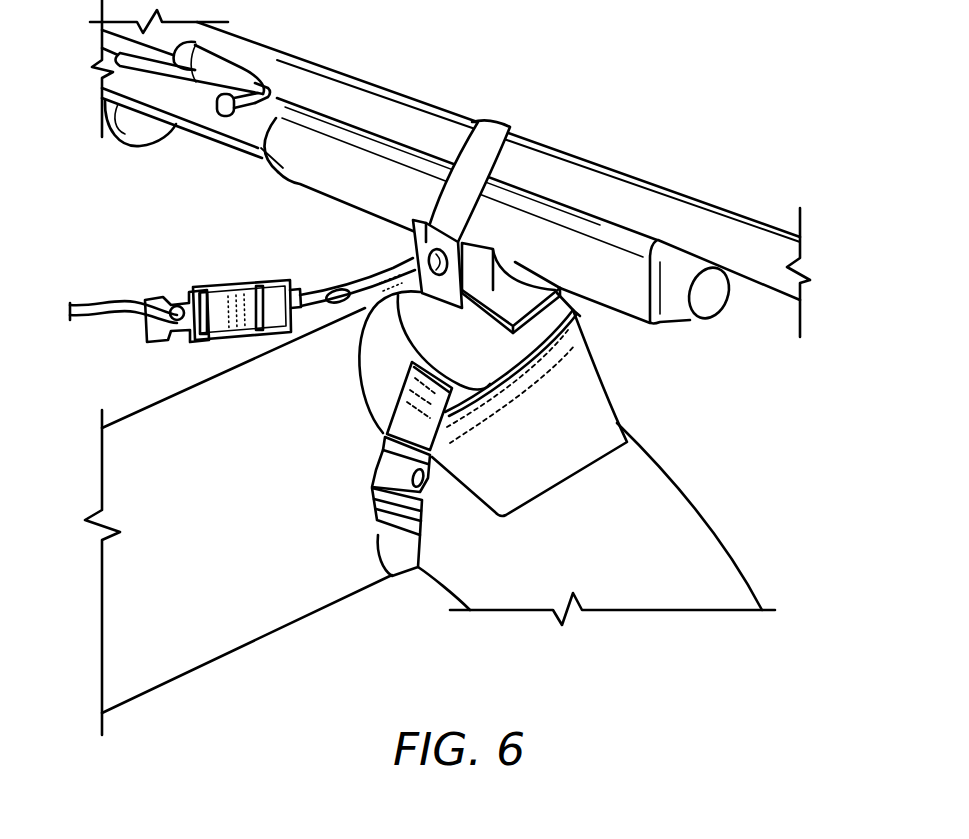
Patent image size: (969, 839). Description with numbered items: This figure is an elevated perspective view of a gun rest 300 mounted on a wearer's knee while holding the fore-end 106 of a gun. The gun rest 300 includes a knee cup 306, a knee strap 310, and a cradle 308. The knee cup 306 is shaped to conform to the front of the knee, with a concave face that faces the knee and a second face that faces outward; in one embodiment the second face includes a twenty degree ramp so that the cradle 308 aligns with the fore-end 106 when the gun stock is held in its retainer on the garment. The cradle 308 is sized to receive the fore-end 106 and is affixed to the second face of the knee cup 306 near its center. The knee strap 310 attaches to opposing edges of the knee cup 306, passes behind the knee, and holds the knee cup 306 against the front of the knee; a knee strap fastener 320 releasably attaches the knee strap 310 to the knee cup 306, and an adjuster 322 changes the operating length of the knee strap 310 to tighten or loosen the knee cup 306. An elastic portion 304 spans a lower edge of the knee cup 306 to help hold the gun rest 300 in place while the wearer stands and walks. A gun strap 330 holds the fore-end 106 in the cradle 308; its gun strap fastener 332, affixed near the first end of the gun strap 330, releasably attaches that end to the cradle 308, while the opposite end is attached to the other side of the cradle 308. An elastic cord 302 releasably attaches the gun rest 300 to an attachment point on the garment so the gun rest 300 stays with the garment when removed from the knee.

The fore-end 106 is at (283, 165).
The gun rest 300 is at (422, 373).
The elastic cord 302 is at (105, 306).
The elastic portion 304 is at (590, 418).
The knee cup 306 is at (387, 355).
The cradle 308 is at (342, 253).
The knee strap 310 is at (403, 577).
The knee strap fastener 320 is at (397, 475).
The adjuster 322 is at (383, 510).
The gun strap 330 is at (488, 124).
The gun strap fastener 332 is at (432, 262).